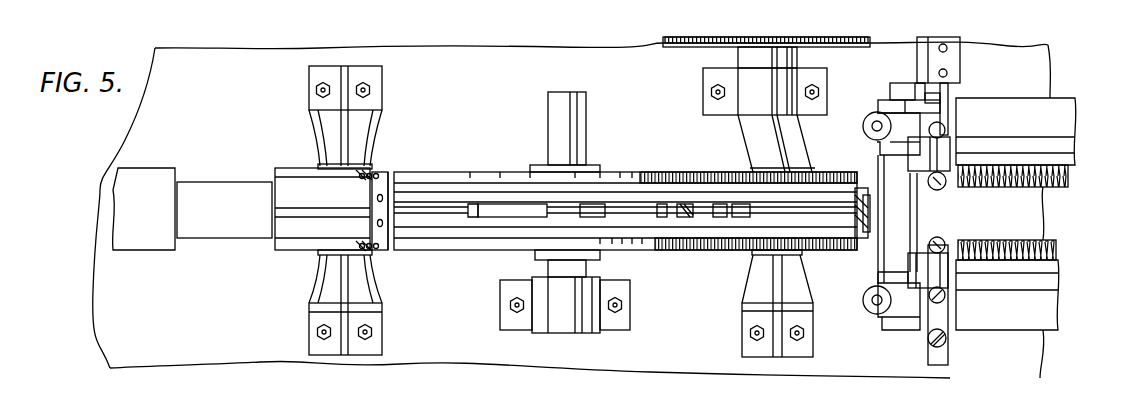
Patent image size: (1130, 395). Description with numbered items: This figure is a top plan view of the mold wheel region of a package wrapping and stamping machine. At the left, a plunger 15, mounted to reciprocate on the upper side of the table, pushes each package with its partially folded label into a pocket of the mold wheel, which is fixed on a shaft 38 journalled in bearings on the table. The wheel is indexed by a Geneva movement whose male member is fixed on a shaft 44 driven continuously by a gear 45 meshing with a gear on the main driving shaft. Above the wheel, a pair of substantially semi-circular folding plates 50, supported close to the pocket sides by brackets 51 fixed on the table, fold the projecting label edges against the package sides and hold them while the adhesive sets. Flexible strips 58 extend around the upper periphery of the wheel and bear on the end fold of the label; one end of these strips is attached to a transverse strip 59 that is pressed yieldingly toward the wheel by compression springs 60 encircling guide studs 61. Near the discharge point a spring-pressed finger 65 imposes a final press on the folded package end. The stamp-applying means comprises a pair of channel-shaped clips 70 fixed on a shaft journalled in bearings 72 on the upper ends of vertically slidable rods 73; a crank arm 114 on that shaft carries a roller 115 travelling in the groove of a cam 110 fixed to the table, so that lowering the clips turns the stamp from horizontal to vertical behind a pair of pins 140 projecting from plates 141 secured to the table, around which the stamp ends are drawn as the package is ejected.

The plunger 15 is at (150, 243).
The shaft 38 is at (548, 100).
The shaft 44 is at (745, 54).
The gear 45 is at (662, 43).
The folding plates 50 is at (613, 180).
The brackets 51 is at (328, 127).
The flexible strips 58 is at (487, 193).
The transverse strip 59 is at (392, 255).
The compression springs 60 is at (375, 173).
The studs 61 is at (360, 180).
The finger 65 is at (868, 210).
The clips 70 is at (933, 148).
The bearings 72 is at (898, 127).
The rods 73 is at (866, 127).
The cam 110 is at (917, 75).
The crank arm 114 is at (912, 107).
The roller 115 is at (933, 102).
The pins 140 is at (942, 190).
The plates 141 is at (950, 352).